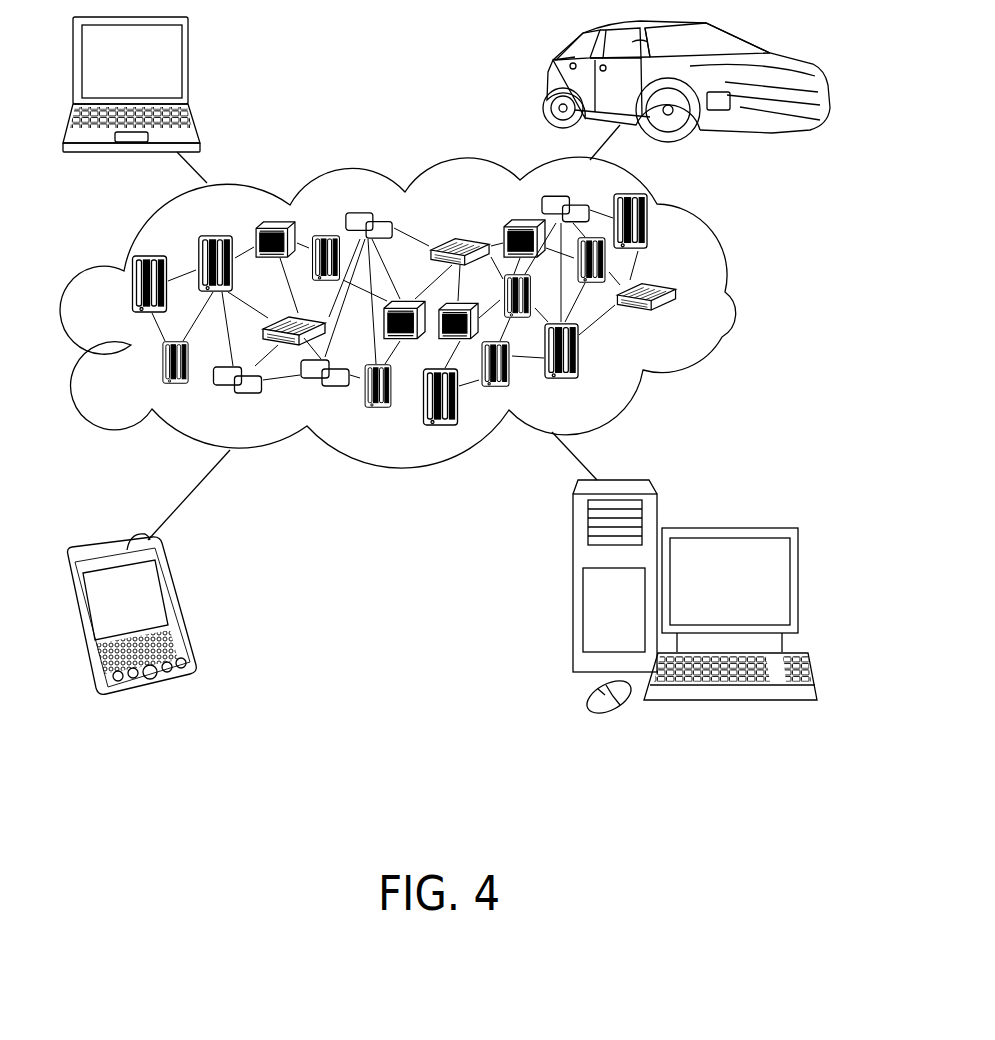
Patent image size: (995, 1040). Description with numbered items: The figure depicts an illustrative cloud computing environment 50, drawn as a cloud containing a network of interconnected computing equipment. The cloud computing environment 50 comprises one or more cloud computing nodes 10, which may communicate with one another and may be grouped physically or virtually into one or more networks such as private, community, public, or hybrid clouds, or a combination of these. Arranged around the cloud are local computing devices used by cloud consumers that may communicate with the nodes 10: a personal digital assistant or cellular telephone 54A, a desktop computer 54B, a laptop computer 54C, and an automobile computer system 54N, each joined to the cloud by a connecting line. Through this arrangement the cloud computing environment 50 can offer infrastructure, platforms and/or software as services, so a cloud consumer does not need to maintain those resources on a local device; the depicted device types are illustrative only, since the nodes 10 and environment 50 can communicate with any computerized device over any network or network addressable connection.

The cloud computing environment 50 is at (725, 292).
The cloud computing node 10 is at (681, 318).
The personal digital assistant or cellular telephone 54A is at (182, 603).
The desktop computer 54B is at (726, 527).
The laptop computer 54C is at (188, 68).
The automobile computer system 54N is at (548, 81).